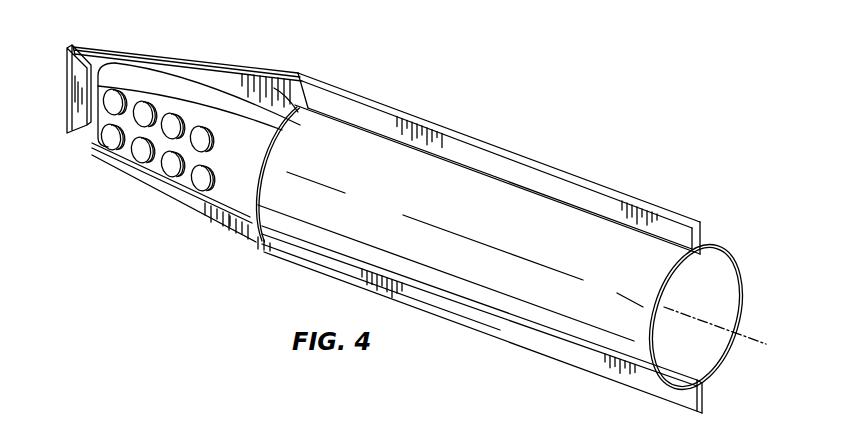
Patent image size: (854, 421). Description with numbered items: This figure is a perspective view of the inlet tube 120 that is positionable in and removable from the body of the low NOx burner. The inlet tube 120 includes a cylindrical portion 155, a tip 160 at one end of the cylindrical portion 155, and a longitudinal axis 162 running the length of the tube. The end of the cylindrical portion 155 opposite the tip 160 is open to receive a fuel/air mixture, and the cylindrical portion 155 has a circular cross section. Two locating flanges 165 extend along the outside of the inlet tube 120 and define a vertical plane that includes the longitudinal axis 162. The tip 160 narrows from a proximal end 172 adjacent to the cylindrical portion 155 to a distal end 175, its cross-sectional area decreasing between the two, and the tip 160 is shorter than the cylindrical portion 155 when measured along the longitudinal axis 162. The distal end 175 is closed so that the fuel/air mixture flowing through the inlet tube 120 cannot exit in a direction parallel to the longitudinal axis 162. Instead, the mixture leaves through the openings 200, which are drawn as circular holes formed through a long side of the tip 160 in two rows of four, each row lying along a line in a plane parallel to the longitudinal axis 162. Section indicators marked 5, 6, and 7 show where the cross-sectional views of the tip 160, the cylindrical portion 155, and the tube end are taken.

The inlet tube 120 is at (734, 211).
The cylindrical portion 155 is at (578, 222).
The tip 160 is at (134, 80).
The longitudinal axis 162 is at (749, 337).
The locating flanges 165 is at (460, 132).
The proximal end 172 is at (303, 78).
The distal end 175 is at (82, 115).
The openings 200 is at (118, 99).
The section line 5 is at (197, 25).
The section line 6 is at (495, 105).
The section line 7 is at (62, 88).